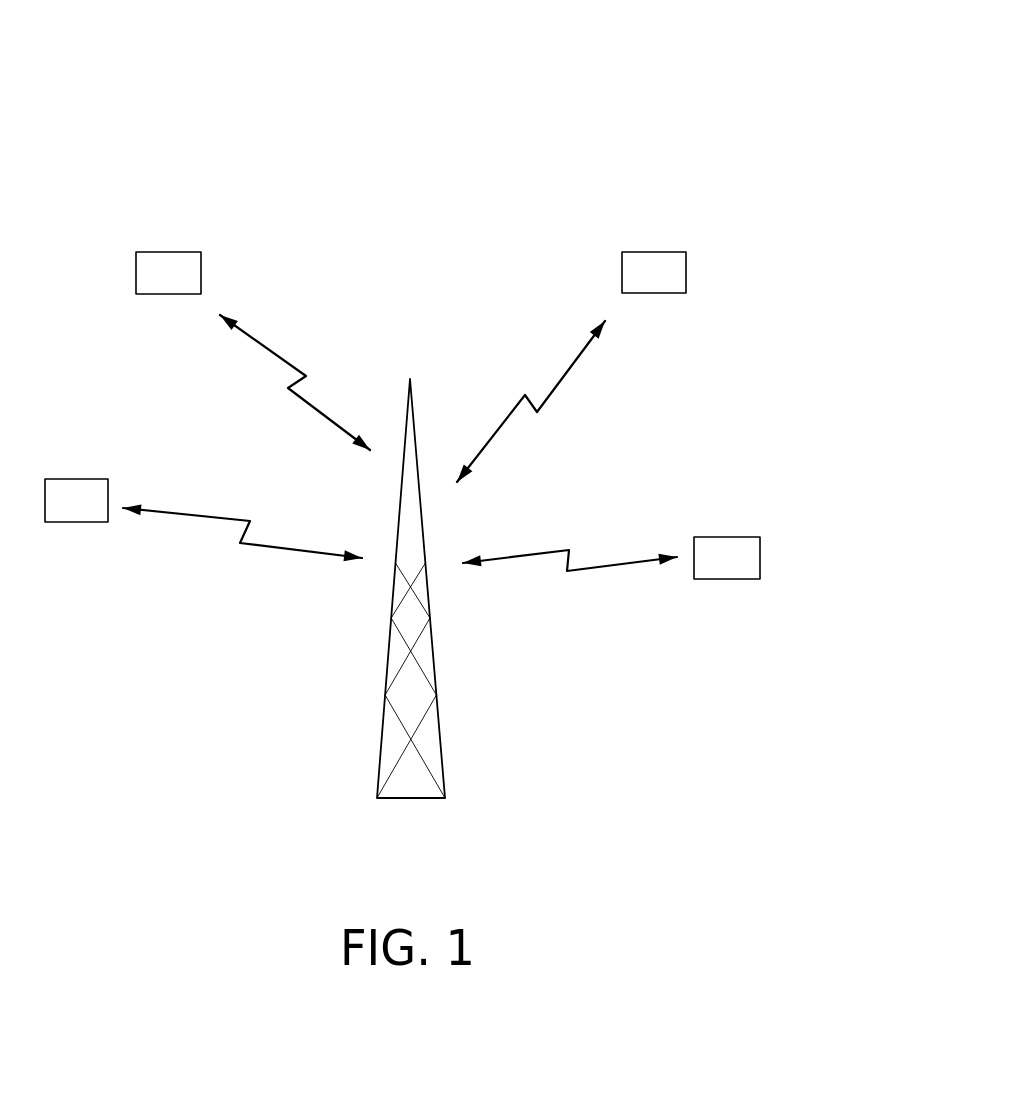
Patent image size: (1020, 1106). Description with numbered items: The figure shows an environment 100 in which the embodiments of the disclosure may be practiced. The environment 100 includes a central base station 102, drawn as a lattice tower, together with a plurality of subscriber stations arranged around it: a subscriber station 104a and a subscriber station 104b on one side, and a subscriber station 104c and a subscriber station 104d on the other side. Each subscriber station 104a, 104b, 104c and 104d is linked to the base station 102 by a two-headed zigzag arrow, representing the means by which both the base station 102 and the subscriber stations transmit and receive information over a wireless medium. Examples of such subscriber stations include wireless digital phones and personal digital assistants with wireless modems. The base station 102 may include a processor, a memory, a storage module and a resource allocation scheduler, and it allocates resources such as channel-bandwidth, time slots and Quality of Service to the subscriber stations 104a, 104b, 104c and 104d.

The environment 100 is at (677, 110).
The base station 102 is at (433, 657).
The subscriber station 104a is at (686, 273).
The subscriber station 104b is at (760, 555).
The subscriber station 104c is at (69, 479).
The subscriber station 104d is at (201, 272).